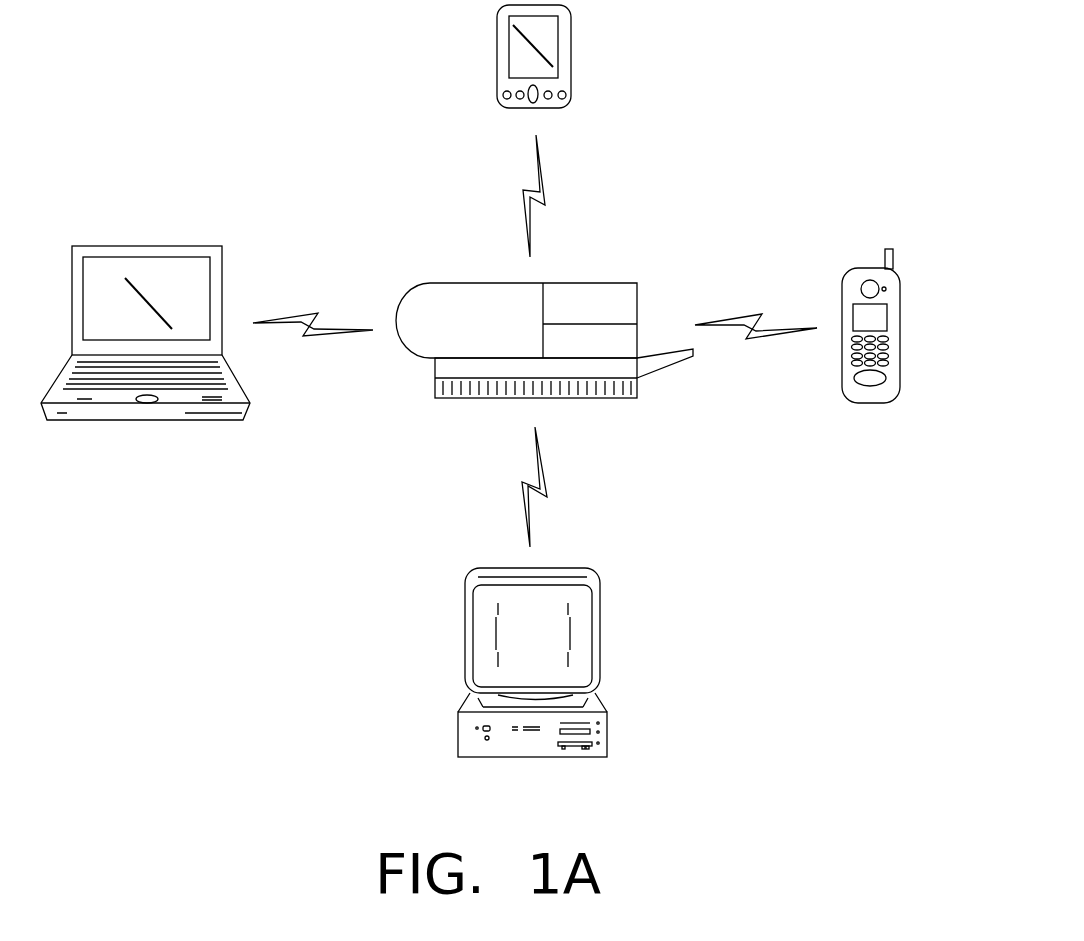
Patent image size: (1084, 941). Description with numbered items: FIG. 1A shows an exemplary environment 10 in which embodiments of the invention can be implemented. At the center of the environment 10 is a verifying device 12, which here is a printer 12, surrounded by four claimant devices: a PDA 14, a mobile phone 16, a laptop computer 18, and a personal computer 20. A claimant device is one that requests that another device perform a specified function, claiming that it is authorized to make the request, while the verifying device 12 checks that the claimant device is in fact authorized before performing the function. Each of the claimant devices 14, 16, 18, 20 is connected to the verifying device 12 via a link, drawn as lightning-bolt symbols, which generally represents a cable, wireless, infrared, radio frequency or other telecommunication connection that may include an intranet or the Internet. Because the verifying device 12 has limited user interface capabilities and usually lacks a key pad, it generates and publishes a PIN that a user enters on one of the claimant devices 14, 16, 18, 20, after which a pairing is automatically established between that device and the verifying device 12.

The environment 10 is at (199, 132).
The verifying device 12 is at (605, 292).
The PDA 14 is at (562, 58).
The mobile phone 16 is at (893, 315).
The laptop computer 18 is at (212, 261).
The personal computer 20 is at (597, 638).